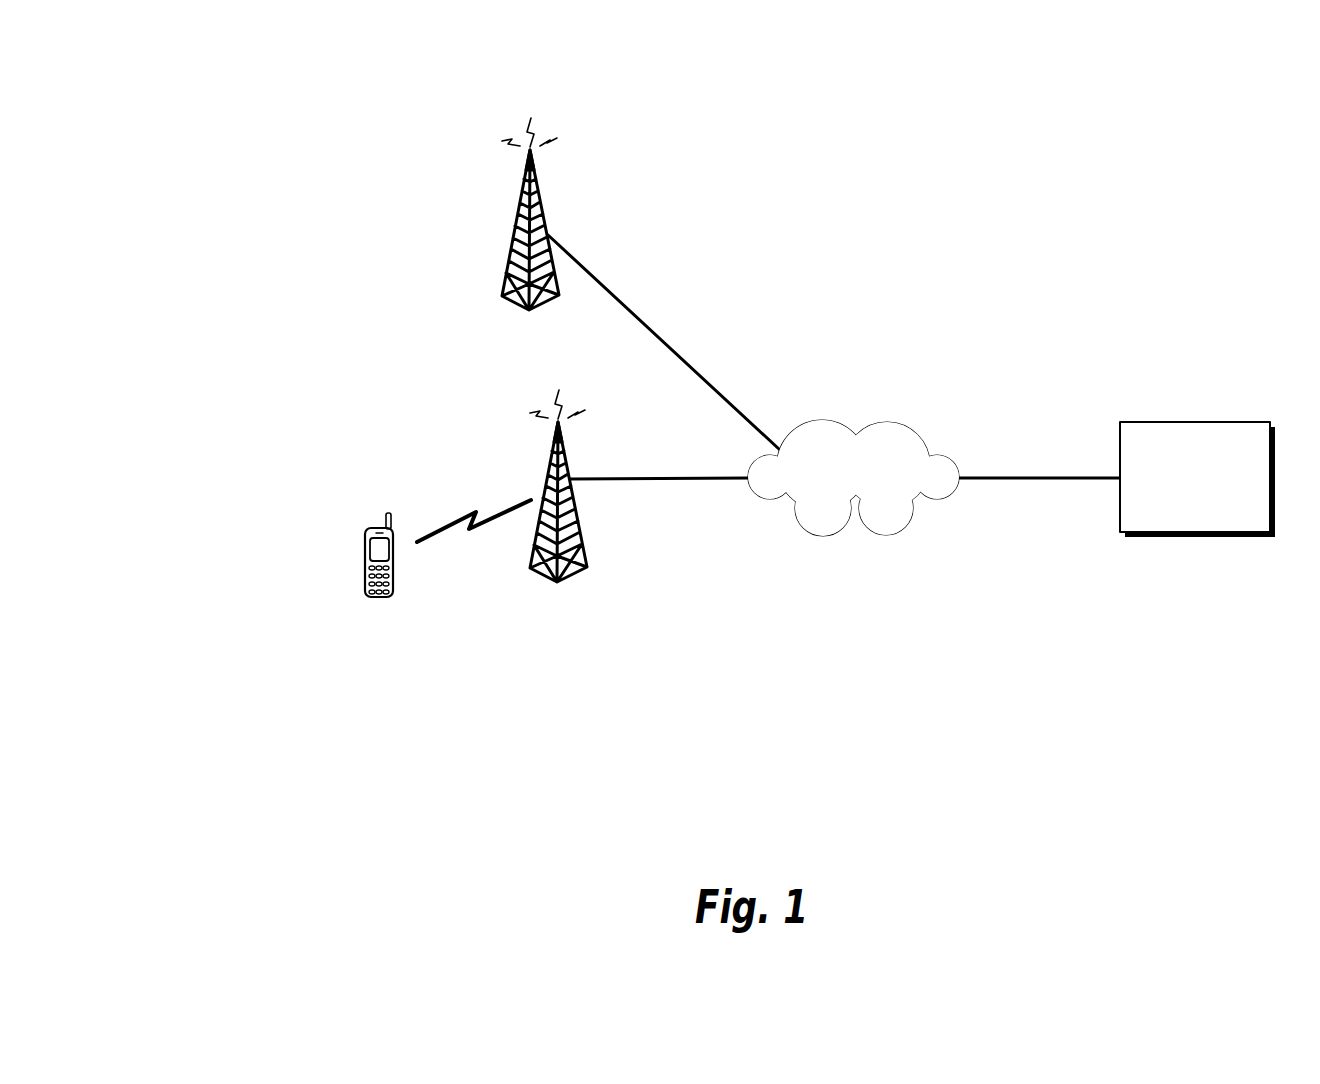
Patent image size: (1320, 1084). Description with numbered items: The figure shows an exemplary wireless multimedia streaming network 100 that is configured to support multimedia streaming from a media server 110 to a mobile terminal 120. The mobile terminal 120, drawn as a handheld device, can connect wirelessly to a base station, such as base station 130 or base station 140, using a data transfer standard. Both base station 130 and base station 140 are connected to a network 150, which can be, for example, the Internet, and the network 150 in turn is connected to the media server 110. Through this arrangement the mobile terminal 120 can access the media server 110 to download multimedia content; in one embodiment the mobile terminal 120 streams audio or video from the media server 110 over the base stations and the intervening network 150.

The wireless multimedia streaming network 100 is at (240, 102).
The media server 110 is at (1137, 420).
The mobile terminal 120 is at (369, 527).
The base station 130 is at (570, 578).
The base station 140 is at (542, 306).
The network 150 is at (822, 421).